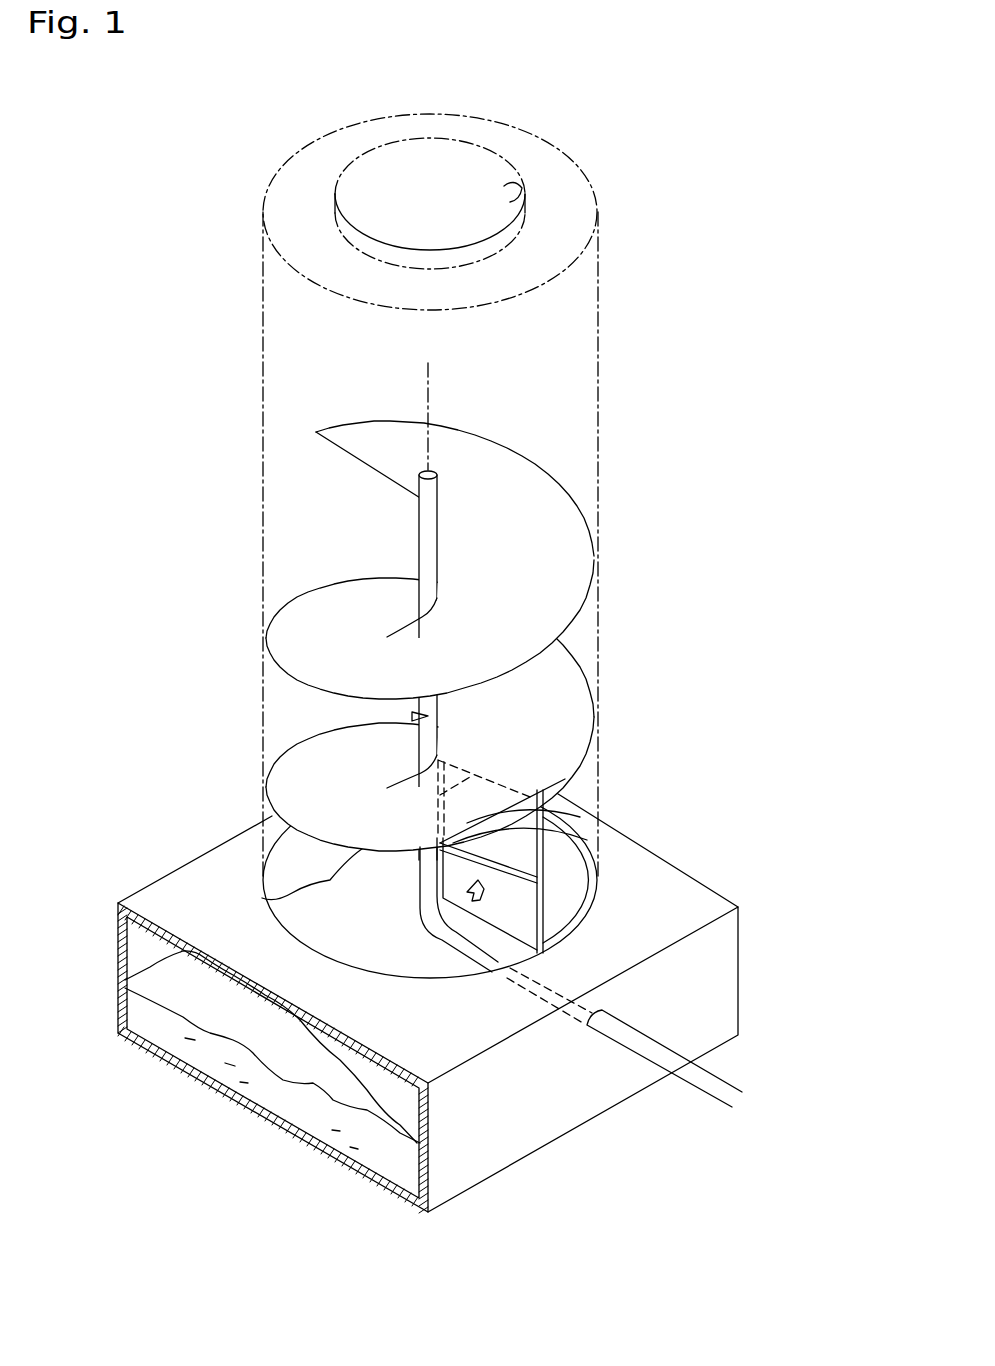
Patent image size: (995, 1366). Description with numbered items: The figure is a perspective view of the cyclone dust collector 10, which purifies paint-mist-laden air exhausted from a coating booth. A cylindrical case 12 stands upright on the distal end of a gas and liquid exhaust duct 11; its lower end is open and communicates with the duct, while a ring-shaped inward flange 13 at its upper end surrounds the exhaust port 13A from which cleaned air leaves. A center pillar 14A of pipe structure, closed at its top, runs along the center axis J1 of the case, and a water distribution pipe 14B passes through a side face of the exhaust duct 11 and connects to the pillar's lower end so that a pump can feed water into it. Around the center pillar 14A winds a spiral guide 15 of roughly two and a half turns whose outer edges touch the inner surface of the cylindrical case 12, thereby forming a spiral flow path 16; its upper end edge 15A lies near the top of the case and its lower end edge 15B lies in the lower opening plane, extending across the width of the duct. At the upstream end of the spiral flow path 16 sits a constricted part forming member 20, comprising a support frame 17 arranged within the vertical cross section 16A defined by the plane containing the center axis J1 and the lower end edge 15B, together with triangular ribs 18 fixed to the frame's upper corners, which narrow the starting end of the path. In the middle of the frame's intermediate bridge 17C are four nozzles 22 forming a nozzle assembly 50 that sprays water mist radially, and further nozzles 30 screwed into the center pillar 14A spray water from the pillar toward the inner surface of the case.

The cyclone dust collector 10 is at (672, 137).
The gas and liquid exhaust duct 11 is at (512, 1140).
The cylindrical case 12 is at (600, 268).
The inward flange 13 is at (548, 228).
The exhaust port 13A is at (526, 188).
The center axis J1 is at (432, 385).
The center pillar 14A is at (432, 512).
The water distribution pipe 14B is at (733, 1077).
The spiral guide 15 is at (563, 483).
The upper end edge 15A is at (360, 469).
The lower end edge 15B is at (480, 905).
The spiral flow path 16 is at (557, 675).
The vertical cross section 16A is at (543, 958).
The support frame 17 is at (545, 930).
The intermediate bridge 17C is at (474, 856).
The triangular ribs 18 is at (520, 823).
The constricted part forming member 20 is at (544, 903).
The nozzles 22 is at (476, 851).
The nozzles 30 is at (412, 716).
The nozzle assembly 50 is at (474, 897).